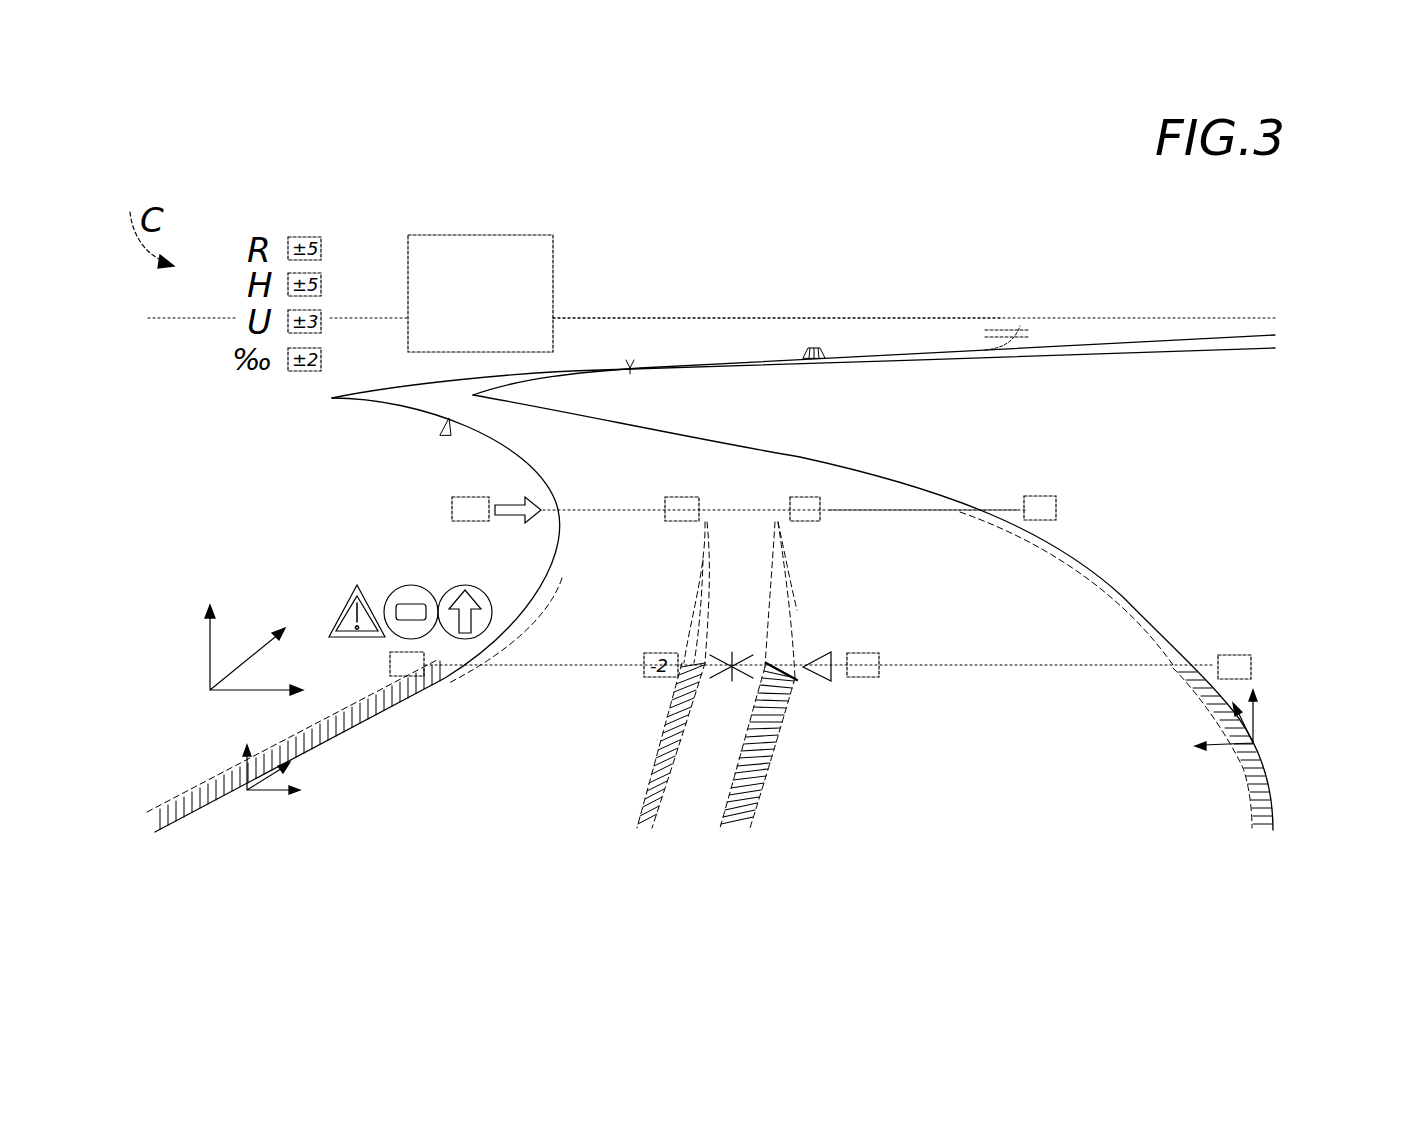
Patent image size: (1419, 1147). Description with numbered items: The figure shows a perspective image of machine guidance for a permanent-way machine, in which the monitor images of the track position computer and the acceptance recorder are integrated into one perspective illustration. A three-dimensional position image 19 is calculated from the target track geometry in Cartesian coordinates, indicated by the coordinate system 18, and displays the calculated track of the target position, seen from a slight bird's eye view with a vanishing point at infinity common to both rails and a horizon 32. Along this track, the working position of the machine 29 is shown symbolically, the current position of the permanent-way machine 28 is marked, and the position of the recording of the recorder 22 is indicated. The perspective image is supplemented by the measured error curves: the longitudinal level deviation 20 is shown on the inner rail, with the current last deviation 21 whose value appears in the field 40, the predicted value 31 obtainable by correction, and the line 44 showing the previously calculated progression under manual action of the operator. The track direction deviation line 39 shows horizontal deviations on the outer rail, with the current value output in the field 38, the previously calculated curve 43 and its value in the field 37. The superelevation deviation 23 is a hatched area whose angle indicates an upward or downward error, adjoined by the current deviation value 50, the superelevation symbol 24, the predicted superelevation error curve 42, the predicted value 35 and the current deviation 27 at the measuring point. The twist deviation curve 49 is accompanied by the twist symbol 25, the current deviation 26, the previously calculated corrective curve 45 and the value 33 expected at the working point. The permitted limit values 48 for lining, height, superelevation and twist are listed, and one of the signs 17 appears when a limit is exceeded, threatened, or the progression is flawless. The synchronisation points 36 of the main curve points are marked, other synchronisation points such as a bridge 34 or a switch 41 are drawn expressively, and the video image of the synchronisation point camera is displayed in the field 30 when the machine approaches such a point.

The signs 17 is at (448, 590).
The coordinate system 18 is at (208, 662).
The three-dimensional position image 19 is at (225, 803).
The longitudinal level deviation 20 is at (310, 750).
The current last deviation 21 is at (447, 680).
The position of the recording of the recorder 22 is at (1030, 668).
The superelevation deviation 23 is at (777, 738).
The superelevation symbol 24 is at (832, 682).
The twist symbol 25 is at (732, 652).
The current twist deviation 26 is at (688, 677).
The current superelevation deviation 27 is at (793, 682).
The current position of the permanent-way machine 28 is at (917, 514).
The working position of the machine 29 is at (532, 522).
The video image display 30 is at (525, 290).
The predicted longitudinal level value 31 is at (450, 508).
The horizon 32 is at (718, 318).
The predicted twist value 33 is at (682, 524).
The bridge 34 is at (815, 350).
The predicted superelevation value 35 is at (808, 522).
The synchronisation points of the main curve points 36 is at (630, 365).
The previously calculated track direction deviation value 37 is at (1058, 507).
The current track direction deviation value 38 is at (1237, 652).
The track direction deviation line 39 is at (1165, 700).
The longitudinal level deviation value field 40 is at (390, 663).
The switch 41 is at (1015, 332).
The predicted superelevation error curve 42 is at (797, 600).
The previously calculated track direction curve 43 is at (1125, 595).
The previously calculated longitudinal level curve 44 is at (540, 600).
The previously calculated twist curve 45 is at (698, 620).
The permitted limit values 48 is at (375, 272).
The twist deviation curve 49 is at (672, 785).
The current superelevation deviation value 50 is at (878, 678).